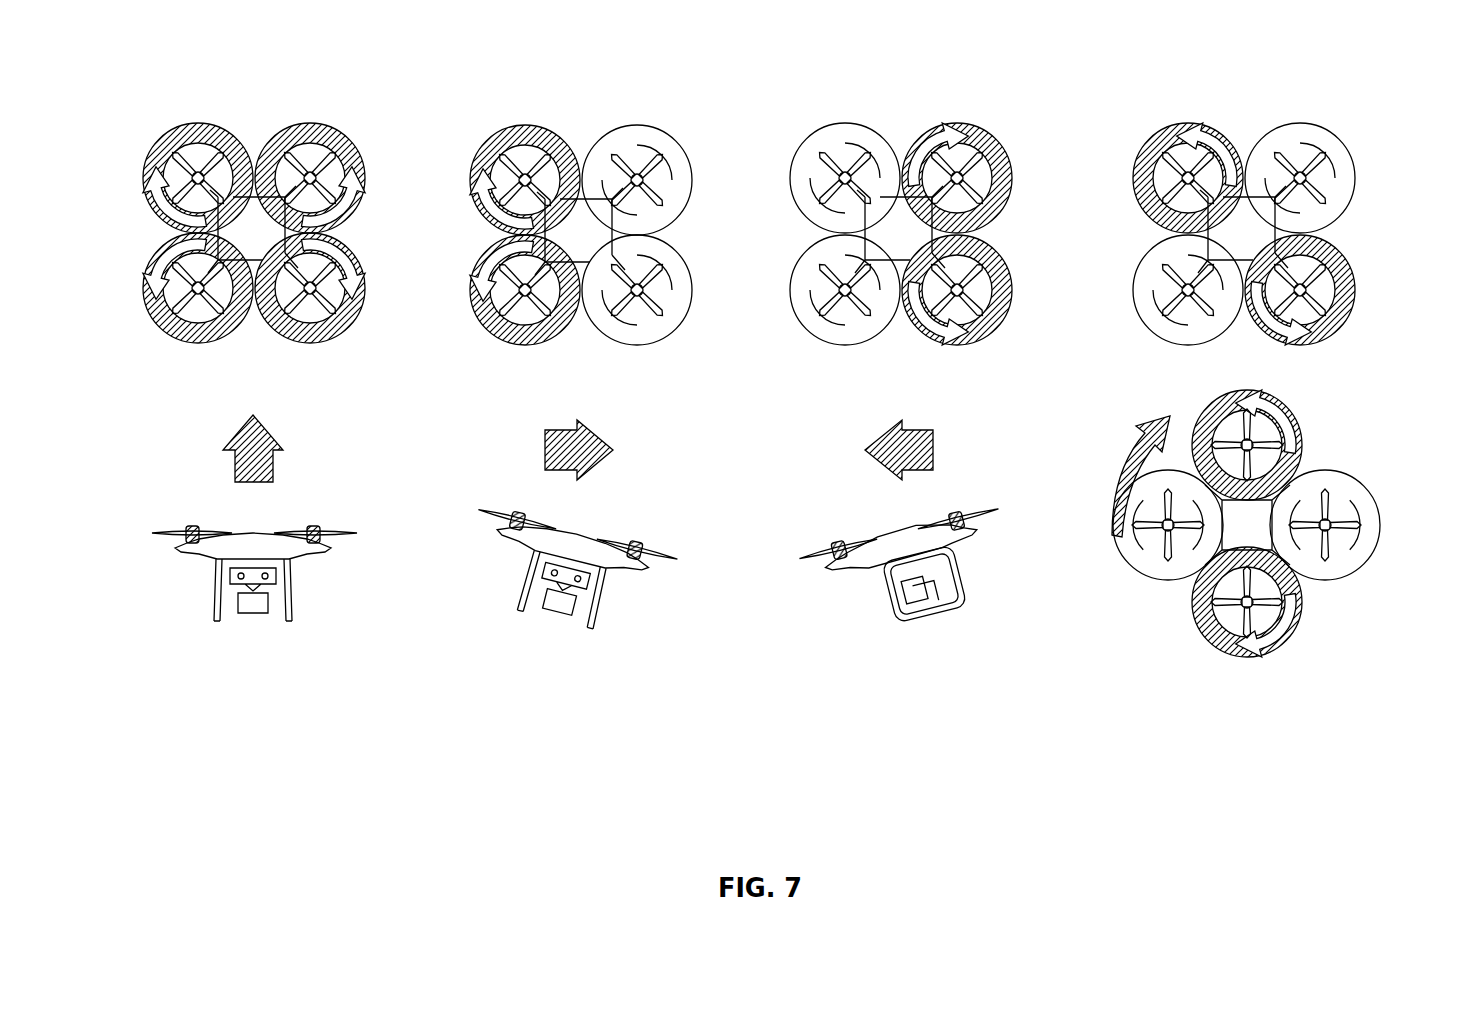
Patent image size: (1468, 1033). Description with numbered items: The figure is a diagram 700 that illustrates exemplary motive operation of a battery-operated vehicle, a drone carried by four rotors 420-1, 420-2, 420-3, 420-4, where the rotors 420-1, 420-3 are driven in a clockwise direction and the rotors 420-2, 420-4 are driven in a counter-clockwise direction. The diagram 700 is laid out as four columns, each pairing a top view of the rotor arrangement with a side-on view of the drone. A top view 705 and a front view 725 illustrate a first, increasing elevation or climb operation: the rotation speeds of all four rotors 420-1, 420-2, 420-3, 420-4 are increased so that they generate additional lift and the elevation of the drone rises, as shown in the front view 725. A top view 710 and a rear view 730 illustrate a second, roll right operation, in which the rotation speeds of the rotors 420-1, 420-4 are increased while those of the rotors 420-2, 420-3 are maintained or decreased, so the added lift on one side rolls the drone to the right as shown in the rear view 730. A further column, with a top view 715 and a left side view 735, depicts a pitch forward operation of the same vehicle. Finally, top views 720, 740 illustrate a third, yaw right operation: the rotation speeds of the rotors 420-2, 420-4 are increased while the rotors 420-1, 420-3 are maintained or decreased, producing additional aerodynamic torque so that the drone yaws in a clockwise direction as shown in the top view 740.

The diagram 700 is at (1375, 58).
The top view 705 is at (258, 76).
The top view 710 is at (585, 76).
The pitch (forward) rotor diagram 715 is at (905, 78).
The top view 720 is at (1230, 78).
The front view 725 is at (322, 500).
The rear view 730 is at (645, 500).
The left side view of UAV pitching forward 735 is at (970, 500).
The top view 740 is at (1322, 440).
The rotor 420-1 is at (350, 327).
The rotor 420-2 is at (163, 327).
The rotor 420-3 is at (163, 144).
The rotor 420-4 is at (350, 144).